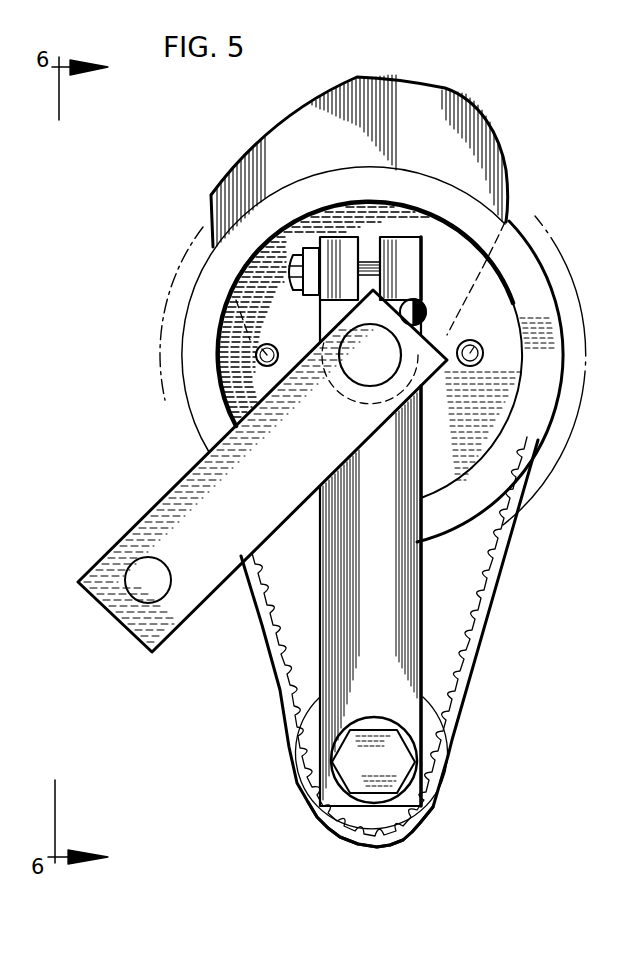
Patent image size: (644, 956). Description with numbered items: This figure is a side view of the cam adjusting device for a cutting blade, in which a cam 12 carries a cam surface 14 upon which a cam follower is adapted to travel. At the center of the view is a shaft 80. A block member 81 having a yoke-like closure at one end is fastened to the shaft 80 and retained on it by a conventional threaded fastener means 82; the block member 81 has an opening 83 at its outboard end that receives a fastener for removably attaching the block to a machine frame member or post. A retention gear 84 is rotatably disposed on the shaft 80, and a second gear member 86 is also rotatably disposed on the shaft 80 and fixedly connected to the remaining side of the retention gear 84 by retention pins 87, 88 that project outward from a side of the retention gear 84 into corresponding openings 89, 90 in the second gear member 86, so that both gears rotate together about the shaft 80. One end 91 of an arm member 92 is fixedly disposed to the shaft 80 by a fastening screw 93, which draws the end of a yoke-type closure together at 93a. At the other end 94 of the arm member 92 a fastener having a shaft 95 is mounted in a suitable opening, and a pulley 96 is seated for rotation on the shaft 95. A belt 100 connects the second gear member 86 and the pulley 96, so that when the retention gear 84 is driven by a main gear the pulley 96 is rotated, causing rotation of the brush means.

The cam 12 is at (337, 82).
The cam surface 14 is at (448, 88).
The shaft 80 is at (352, 366).
The block member 81 is at (133, 524).
The threaded fastener means 82 is at (420, 302).
The opening 83 is at (158, 592).
The retention gear 84 is at (587, 360).
The second gear member 86 is at (192, 298).
The retention pin 87 is at (270, 345).
The retention pin 88 is at (471, 340).
The opening 89 is at (222, 352).
The opening 90 is at (466, 366).
The end of arm member 91 is at (408, 236).
The arm member 92 is at (427, 433).
The fastening screw 93 is at (300, 250).
The yoke-type closure 93a is at (370, 250).
The end of arm member 94 is at (330, 798).
The shaft 95 is at (417, 826).
The pulley 96 is at (290, 767).
The belt 100 is at (492, 595).